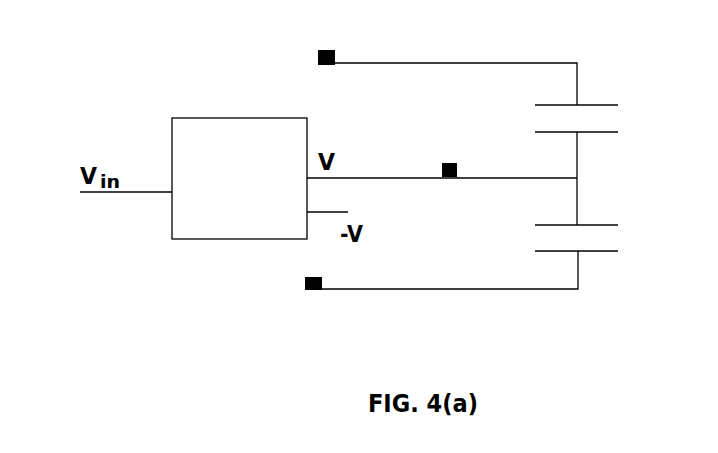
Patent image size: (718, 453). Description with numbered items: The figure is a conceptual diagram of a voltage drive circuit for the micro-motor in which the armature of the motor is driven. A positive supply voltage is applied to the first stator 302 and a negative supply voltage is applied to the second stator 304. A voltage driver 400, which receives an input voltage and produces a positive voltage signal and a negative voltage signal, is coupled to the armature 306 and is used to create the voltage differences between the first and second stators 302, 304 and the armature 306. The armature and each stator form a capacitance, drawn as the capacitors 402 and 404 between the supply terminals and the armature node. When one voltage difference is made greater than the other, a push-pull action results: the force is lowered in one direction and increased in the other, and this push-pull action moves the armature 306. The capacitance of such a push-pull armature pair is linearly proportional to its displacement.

The first stator 302 is at (420, 59).
The second stator 304 is at (418, 289).
The armature 306 is at (442, 154).
The voltage driver 400 is at (239, 178).
The first capacitor 402 is at (606, 118).
The second capacitor 404 is at (606, 236).